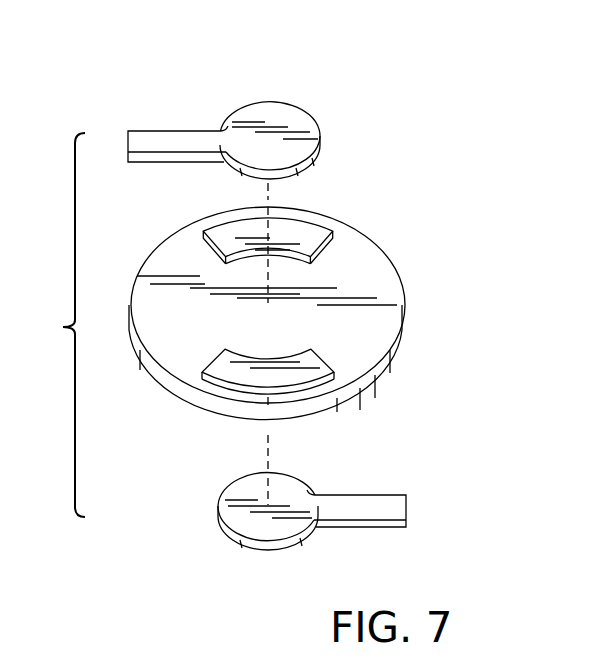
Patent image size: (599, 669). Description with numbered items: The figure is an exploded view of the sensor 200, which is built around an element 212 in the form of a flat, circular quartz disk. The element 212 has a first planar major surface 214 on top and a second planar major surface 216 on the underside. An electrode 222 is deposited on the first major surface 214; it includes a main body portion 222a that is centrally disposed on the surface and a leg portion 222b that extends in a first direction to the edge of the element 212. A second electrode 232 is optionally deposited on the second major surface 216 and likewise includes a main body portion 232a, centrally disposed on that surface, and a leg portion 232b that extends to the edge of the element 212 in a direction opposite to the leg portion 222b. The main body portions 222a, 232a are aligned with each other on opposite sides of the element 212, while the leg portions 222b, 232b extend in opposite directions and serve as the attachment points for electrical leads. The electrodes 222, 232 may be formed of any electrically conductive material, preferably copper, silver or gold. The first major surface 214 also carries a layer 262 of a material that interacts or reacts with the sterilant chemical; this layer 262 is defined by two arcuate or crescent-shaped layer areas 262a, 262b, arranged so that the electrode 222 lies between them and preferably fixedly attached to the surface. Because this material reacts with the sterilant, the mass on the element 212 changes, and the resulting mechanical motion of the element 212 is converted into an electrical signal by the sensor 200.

The sensor 200 is at (432, 204).
The element 212 is at (313, 338).
The first planar major surface 214 is at (378, 327).
The second planar major surface 216 is at (336, 415).
The electrode 222 is at (255, 107).
The main body portion 222a is at (263, 108).
The leg portion 222b is at (163, 138).
The electrode 232 is at (293, 546).
The main body portion 232a is at (272, 533).
The leg portion 232b is at (370, 510).
The layer 262 is at (247, 308).
The arcuate layer area 262a is at (212, 233).
The arcuate layer area 262b is at (232, 367).